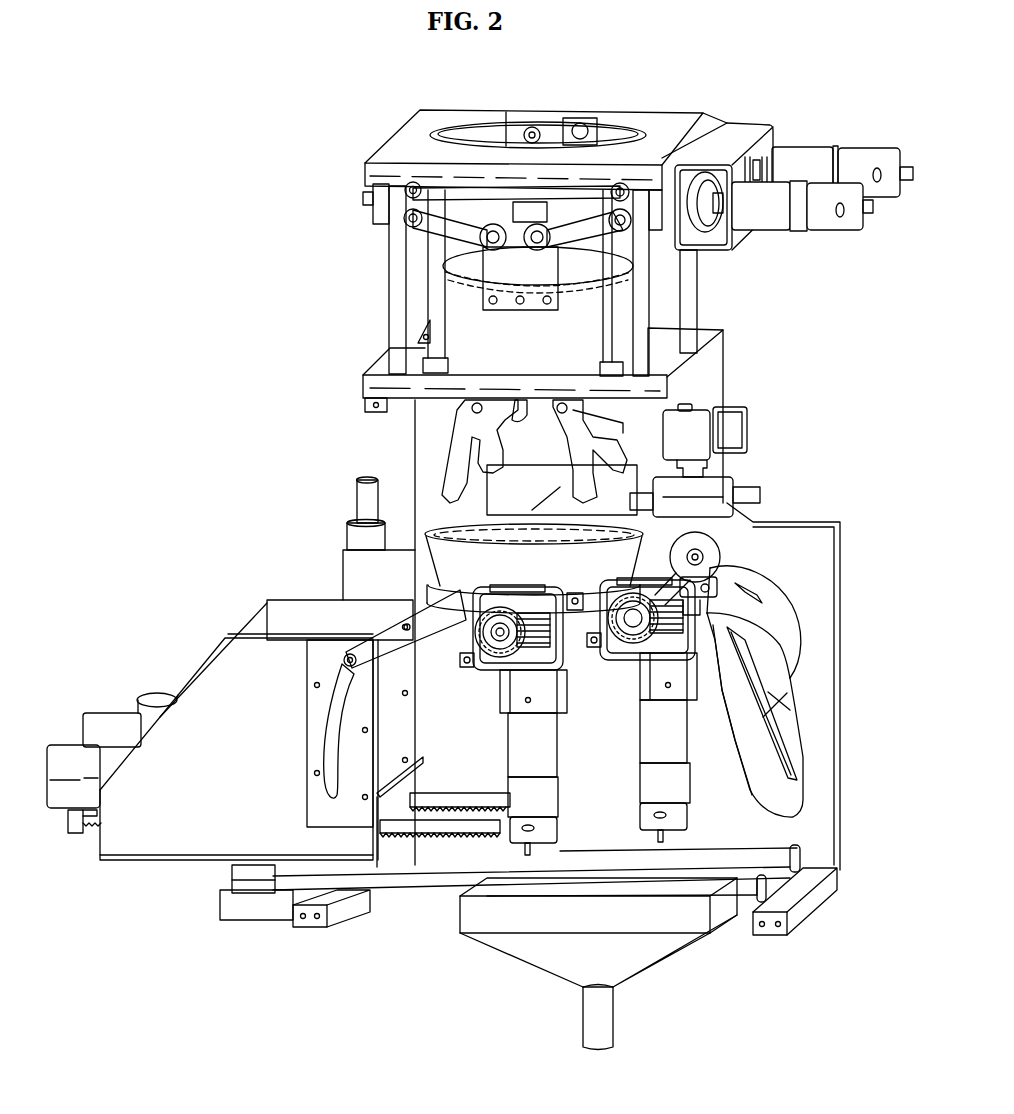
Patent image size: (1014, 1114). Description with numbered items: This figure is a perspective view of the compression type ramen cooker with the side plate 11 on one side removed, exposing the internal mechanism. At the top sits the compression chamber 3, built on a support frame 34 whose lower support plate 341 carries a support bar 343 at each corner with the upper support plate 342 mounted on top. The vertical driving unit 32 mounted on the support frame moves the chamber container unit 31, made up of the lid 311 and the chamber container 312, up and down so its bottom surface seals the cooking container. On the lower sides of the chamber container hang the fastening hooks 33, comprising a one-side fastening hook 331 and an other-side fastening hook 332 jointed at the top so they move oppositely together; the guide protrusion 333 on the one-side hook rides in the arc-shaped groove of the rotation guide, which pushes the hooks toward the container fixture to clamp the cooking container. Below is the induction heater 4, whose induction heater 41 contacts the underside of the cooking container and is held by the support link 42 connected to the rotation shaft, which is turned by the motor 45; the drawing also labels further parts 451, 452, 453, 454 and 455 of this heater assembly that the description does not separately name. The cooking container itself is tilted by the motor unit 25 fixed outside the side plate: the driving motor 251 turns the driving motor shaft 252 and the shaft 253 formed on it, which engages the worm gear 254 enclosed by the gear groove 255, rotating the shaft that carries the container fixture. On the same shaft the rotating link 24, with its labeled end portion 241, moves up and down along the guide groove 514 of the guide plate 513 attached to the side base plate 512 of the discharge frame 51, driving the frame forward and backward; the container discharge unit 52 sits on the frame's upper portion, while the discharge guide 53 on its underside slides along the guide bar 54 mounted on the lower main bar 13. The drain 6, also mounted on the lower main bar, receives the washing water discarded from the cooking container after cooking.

The compression chamber 3 is at (645, 95).
The side plate 11 is at (822, 676).
The lower main bar 13 is at (310, 924).
The rotating link 24 is at (390, 647).
The pivot pin 241 is at (347, 648).
The motor unit 25 is at (562, 769).
The driving motor 251 is at (517, 752).
The driving motor shaft 252 is at (535, 692).
The shaft 253 is at (543, 648).
The worm gear 254 is at (508, 650).
The gear groove 255 is at (492, 655).
The chamber container unit 31 is at (455, 300).
The lid 311 is at (478, 255).
The chamber container 312 is at (458, 330).
The vertical driving unit 32 is at (802, 137).
The fastening hook 33 is at (436, 466).
The one side fastening hook 331 is at (690, 408).
The other side fastening hook 332 is at (463, 446).
The guide protrusion 333 is at (738, 437).
The support frame 34 is at (350, 170).
The lower support plate 341 is at (372, 384).
The upper support plate 342 is at (392, 143).
The support bar 343 is at (697, 292).
The induction heater 4 is at (804, 739).
The induction heater 41 is at (755, 747).
The support link 42 is at (775, 577).
The motor 45 is at (760, 768).
The stirring motor 451 is at (680, 810).
The motor bracket 452 is at (667, 677).
The coupling 453 is at (700, 613).
The pulley 454 is at (700, 560).
The mounting bracket 455 is at (690, 600).
The discharge frame 51 is at (131, 864).
The side base plate 512 is at (167, 852).
The guide plate 513 is at (317, 713).
The guide groove 514 is at (333, 703).
The container discharge unit 52 is at (97, 745).
The discharge guide 53 is at (253, 882).
The guide bar 54 is at (375, 882).
The drain 6 is at (562, 968).